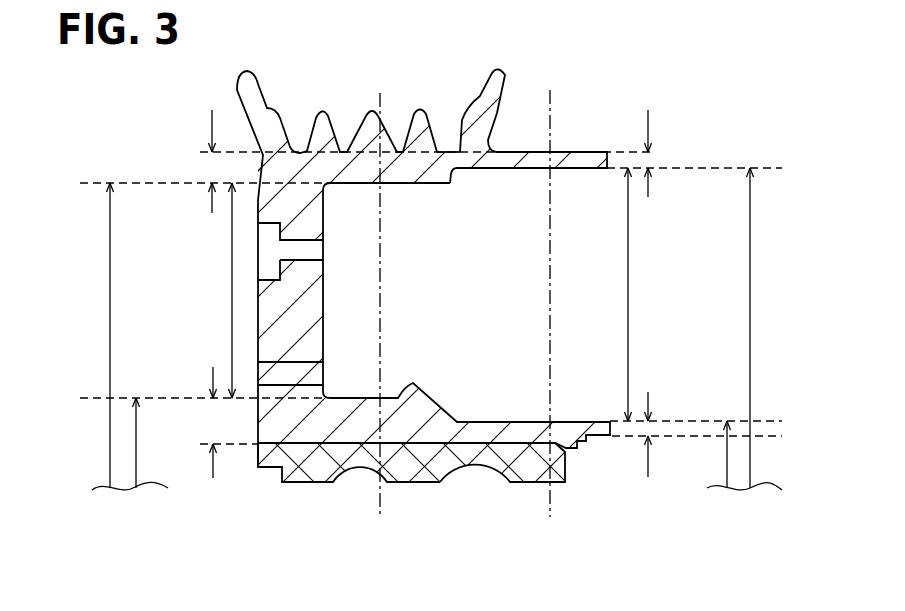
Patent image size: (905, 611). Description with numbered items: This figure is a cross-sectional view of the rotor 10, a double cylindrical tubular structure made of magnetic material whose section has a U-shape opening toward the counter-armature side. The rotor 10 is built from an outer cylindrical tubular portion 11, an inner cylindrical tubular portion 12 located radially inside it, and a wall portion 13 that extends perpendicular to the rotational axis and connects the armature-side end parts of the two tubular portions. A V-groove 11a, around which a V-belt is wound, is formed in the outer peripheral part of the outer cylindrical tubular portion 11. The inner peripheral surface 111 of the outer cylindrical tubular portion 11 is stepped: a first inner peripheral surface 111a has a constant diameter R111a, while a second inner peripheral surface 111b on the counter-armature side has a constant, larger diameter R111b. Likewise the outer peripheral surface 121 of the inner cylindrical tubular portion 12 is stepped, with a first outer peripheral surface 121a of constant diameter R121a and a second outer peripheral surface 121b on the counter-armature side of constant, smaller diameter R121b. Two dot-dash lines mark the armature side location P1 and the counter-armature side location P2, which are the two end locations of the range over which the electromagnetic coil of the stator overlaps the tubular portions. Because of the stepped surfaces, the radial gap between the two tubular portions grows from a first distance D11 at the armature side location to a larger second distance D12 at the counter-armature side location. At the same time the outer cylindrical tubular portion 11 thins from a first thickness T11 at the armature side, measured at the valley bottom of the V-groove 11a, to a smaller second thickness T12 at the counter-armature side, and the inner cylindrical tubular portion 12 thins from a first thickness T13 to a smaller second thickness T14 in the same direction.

The rotor 10 is at (452, 305).
The outer cylindrical tubular portion 11 is at (398, 163).
The V-groove 11a is at (310, 150).
The inner peripheral surface 111 is at (452, 305).
The first inner peripheral surface 111a is at (445, 170).
The second inner peripheral surface 111b is at (525, 173).
The inner cylindrical tubular portion 12 is at (398, 445).
The outer peripheral surface 121 is at (452, 305).
The first outer peripheral surface 121a is at (427, 398).
The second outer peripheral surface 121b is at (528, 422).
The wall portion 13 is at (307, 347).
The first thickness T11 is at (212, 168).
The second thickness T12 is at (648, 158).
The first thickness T13 is at (213, 421).
The second thickness T14 is at (648, 428).
The first distance D11 is at (232, 265).
The second distance D12 is at (628, 263).
The diameter R111a is at (110, 310).
The diameter R111b is at (750, 307).
The diameter R121a is at (136, 452).
The diameter R121b is at (727, 453).
The armature side location P1 is at (380, 485).
The counter-armature side location P2 is at (553, 495).